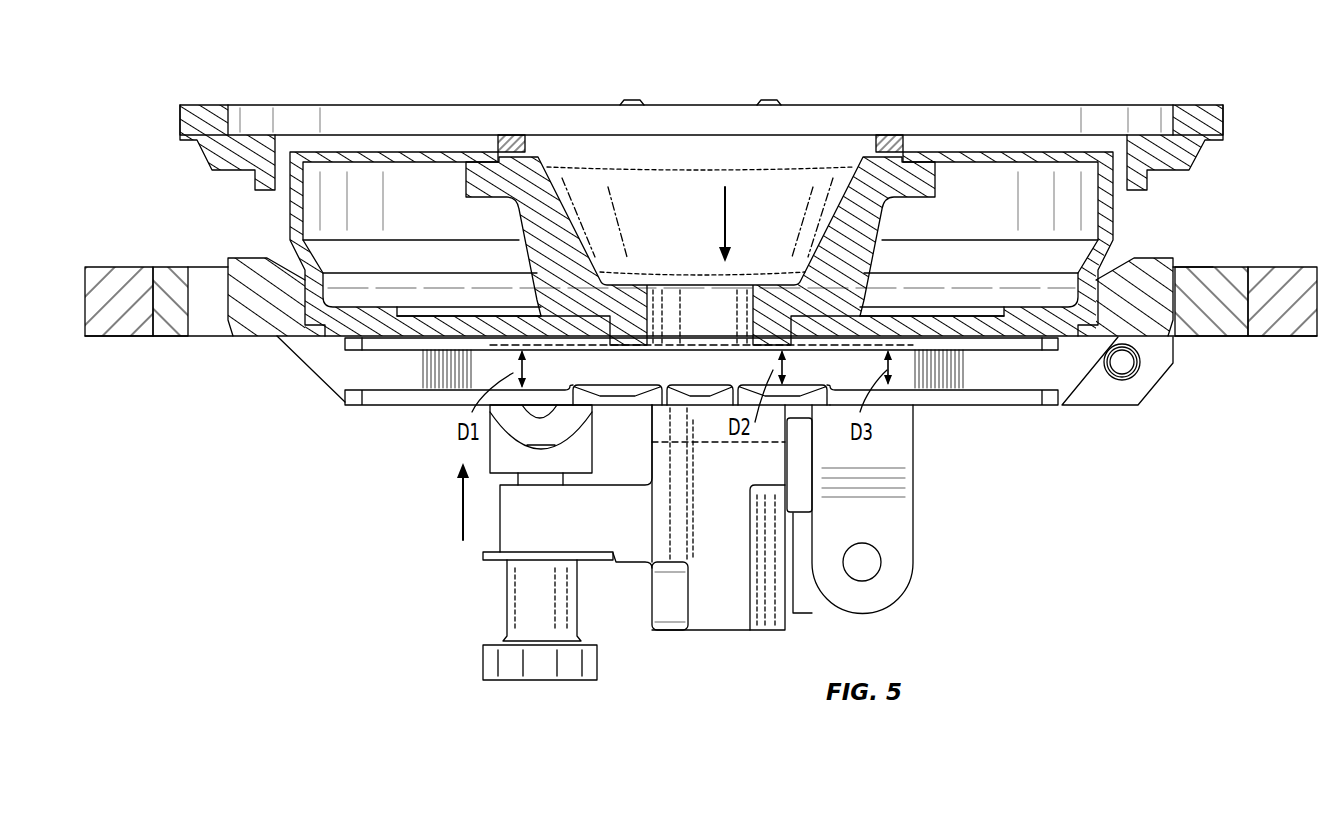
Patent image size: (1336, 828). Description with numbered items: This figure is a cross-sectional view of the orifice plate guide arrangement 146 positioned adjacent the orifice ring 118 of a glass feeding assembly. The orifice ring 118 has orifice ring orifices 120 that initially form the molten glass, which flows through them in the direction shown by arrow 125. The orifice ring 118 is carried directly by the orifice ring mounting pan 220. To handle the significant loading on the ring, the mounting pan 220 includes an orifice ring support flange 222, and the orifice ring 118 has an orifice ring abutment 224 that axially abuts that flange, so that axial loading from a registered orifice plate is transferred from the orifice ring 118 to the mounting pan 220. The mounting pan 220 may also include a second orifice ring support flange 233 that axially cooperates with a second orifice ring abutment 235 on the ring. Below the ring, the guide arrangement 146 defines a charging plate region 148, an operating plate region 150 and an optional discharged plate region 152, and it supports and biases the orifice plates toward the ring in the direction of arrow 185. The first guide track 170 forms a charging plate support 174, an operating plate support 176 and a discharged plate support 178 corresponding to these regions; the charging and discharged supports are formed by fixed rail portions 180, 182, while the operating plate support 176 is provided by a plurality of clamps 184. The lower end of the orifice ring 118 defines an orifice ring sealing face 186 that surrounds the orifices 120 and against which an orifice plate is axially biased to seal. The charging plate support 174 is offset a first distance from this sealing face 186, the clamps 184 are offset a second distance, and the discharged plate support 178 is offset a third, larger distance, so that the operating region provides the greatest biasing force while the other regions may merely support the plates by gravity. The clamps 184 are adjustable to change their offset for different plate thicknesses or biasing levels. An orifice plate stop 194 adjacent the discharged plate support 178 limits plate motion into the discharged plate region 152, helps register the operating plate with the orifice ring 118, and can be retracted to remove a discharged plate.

The orifice ring 118 is at (552, 213).
The orifice ring orifices 120 is at (754, 276).
The arrow 125 is at (720, 210).
The guide arrangement 146 is at (1060, 500).
The charging plate region 148 is at (420, 430).
The operating plate region 150 is at (708, 448).
The discharged plate region 152 is at (957, 438).
The first guide track 170 is at (332, 440).
The charging plate support 174 is at (408, 386).
The operating plate support 176 is at (702, 392).
The discharged plate support 178 is at (957, 390).
The fixed rail portion 180 is at (387, 406).
The fixed rail portion 182 is at (1005, 407).
The clamps 184 is at (595, 397).
The arrow 185 is at (462, 525).
The orifice ring sealing face 186 is at (632, 360).
The orifice plate stop 194 is at (1123, 363).
The orifice ring mounting pan 220 is at (290, 215).
The orifice ring support flange 222 is at (398, 150).
The orifice ring abutment 224 is at (485, 140).
The second orifice ring support flange 233 is at (417, 318).
The second orifice ring abutment 235 is at (548, 320).